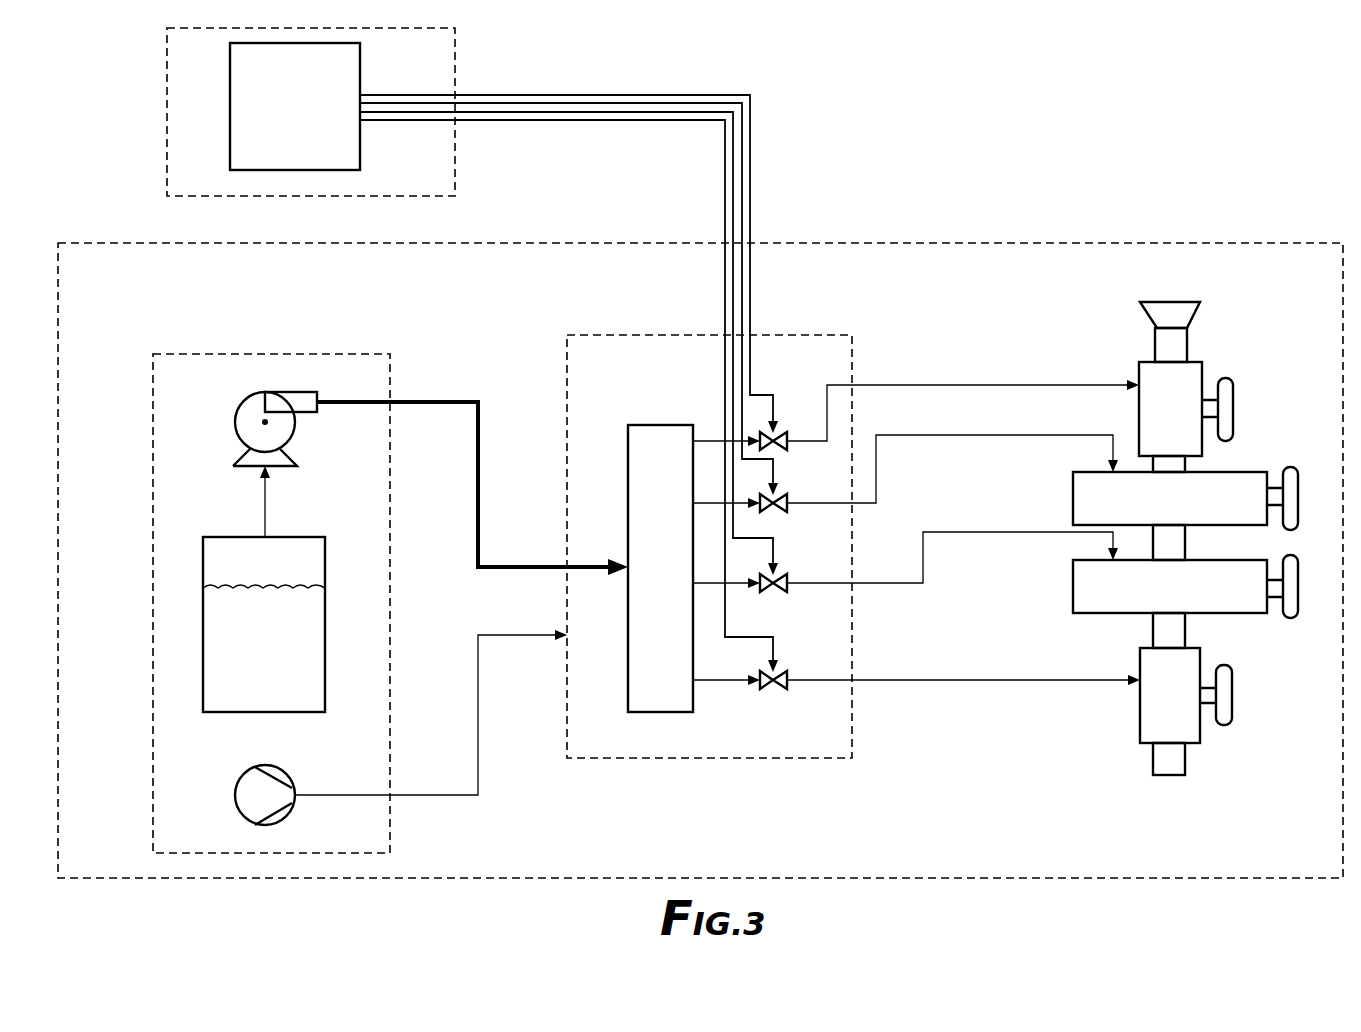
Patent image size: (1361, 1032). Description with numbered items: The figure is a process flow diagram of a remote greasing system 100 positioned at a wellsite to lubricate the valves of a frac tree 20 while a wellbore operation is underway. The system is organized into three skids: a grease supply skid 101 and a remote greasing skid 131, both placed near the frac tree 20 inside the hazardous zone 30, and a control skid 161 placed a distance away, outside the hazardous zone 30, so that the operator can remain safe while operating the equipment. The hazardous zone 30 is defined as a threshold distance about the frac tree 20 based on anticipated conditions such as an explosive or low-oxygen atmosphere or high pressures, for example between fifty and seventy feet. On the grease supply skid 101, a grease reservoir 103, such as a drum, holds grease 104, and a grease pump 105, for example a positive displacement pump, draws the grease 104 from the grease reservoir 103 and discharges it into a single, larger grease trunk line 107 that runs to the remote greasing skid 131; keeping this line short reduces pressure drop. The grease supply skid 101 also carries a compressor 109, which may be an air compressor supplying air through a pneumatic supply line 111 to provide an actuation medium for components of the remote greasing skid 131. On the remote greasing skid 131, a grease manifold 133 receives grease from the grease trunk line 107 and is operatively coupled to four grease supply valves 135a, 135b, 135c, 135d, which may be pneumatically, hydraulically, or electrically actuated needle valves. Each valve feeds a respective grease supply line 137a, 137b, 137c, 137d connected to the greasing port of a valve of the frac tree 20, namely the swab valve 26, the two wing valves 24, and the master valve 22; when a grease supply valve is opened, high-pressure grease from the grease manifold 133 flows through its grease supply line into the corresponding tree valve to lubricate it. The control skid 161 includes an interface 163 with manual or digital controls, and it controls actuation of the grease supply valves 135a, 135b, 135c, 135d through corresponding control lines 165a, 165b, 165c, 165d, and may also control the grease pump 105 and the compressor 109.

The remote greasing system 100 is at (1058, 88).
The control skid 161 is at (167, 42).
The interface 163 is at (318, 121).
The control line 165a is at (500, 95).
The control line 165b is at (555, 103).
The control line 165c is at (637, 112).
The control line 165d is at (705, 120).
The hazardous zone 30 is at (1108, 243).
The frac tree 20 is at (1257, 307).
The grease supply skid 101 is at (372, 354).
The grease pump 105 is at (245, 400).
The grease reservoir 103 is at (313, 537).
The grease 104 is at (287, 650).
The grease trunk line 107 is at (462, 402).
The compressor 109 is at (285, 772).
The pneumatic supply line 111 is at (478, 643).
The remote greasing skid 131 is at (765, 335).
The grease manifold 133 is at (650, 425).
The grease supply valve 135a is at (783, 433).
The grease supply valve 135b is at (787, 512).
The grease supply valve 135c is at (787, 592).
The grease supply valve 135d is at (787, 690).
The grease supply line 137a is at (950, 385).
The grease supply line 137b is at (937, 435).
The grease supply line 137c is at (945, 532).
The grease supply line 137d is at (945, 680).
The swab valve 26 is at (1202, 370).
The wing valve 24 is at (1250, 472).
The master valve 22 is at (1200, 735).